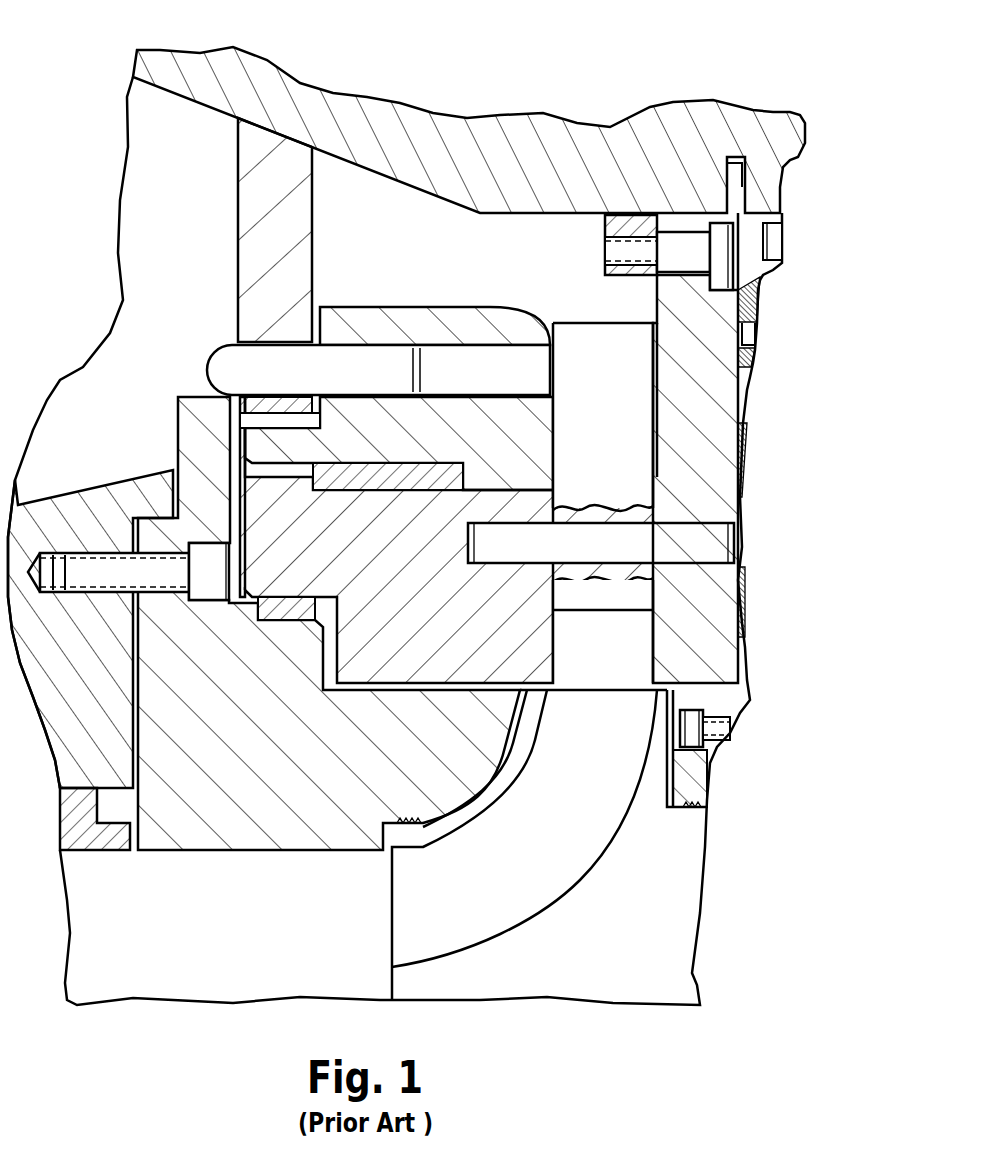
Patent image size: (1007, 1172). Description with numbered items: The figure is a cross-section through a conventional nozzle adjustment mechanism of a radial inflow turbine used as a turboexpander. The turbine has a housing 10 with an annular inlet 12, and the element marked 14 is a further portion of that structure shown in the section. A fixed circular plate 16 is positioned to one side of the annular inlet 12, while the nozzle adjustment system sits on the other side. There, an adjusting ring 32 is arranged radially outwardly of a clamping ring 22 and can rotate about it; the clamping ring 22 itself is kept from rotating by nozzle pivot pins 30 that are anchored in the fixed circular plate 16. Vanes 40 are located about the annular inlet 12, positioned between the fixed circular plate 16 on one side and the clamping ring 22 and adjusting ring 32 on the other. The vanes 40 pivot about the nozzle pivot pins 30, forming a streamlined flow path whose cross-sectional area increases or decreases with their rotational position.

The housing 10 is at (667, 100).
The annular inlet 12 is at (514, 265).
The lower housing portion 14 is at (677, 905).
The fixed circular plate 16 is at (710, 613).
The clamping ring 22 is at (498, 645).
The nozzle pivot pins 30 is at (742, 543).
The adjusting ring 32 is at (393, 307).
The vanes 40 is at (657, 395).